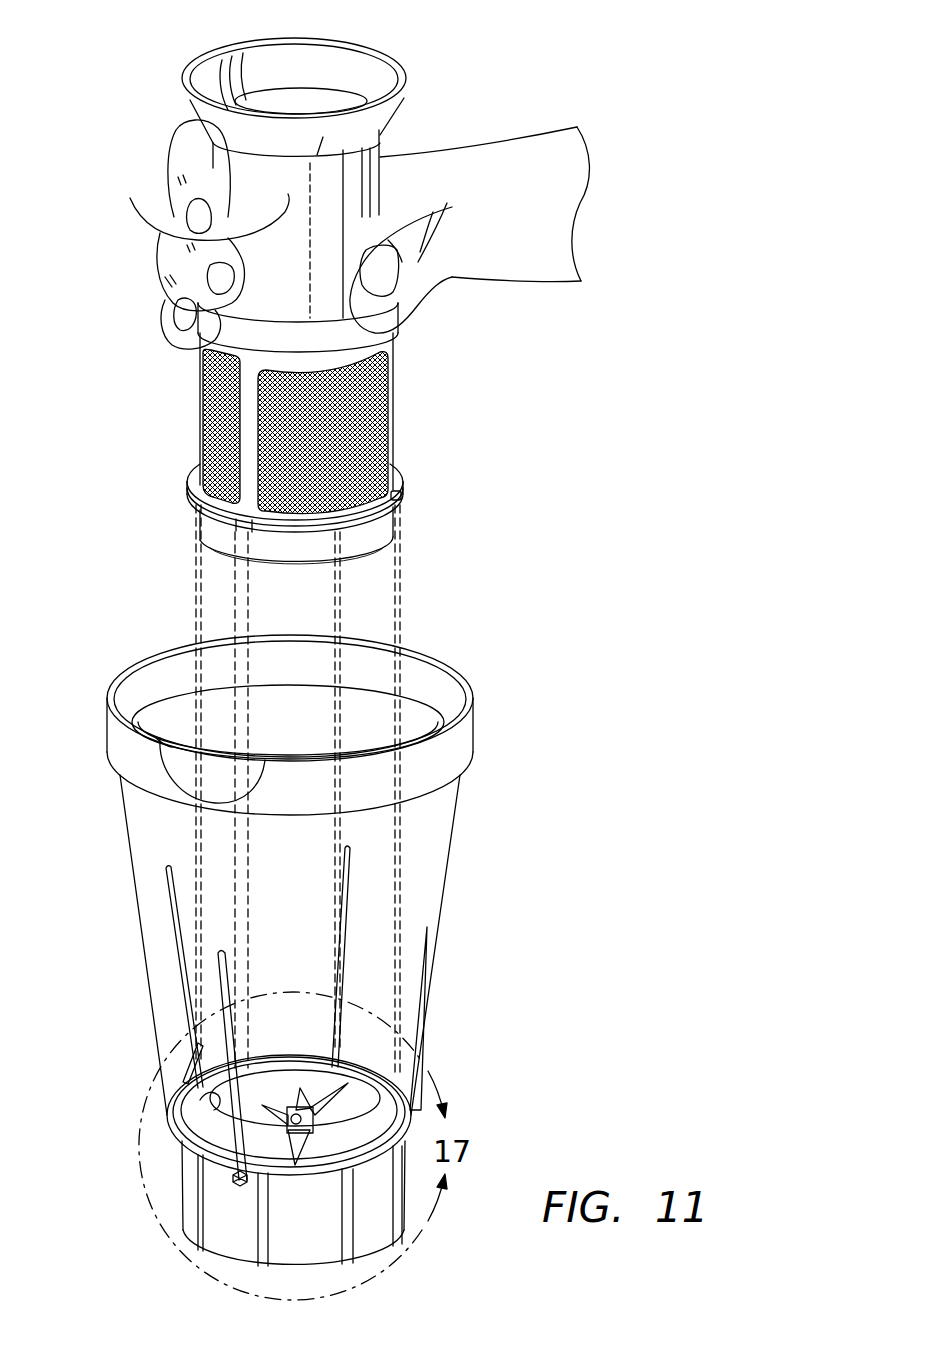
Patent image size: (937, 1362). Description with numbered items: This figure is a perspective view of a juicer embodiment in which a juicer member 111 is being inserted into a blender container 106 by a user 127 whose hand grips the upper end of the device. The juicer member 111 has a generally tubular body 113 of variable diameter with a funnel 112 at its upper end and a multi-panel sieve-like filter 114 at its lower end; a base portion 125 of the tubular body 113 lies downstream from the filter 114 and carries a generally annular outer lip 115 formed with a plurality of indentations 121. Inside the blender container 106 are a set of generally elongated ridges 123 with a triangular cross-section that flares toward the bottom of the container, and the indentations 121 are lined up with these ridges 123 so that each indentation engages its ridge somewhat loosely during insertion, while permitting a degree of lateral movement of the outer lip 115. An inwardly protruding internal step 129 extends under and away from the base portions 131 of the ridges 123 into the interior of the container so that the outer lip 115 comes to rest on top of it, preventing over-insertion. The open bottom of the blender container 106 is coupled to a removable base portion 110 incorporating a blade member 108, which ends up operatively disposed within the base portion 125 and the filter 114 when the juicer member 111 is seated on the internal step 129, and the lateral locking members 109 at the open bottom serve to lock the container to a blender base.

The blender container 106 is at (433, 877).
The blade member 108 is at (285, 1118).
The locking members 109 is at (236, 1179).
The removable base portion 110 is at (367, 1200).
The juicer member 111 is at (333, 308).
The funnel 112 is at (402, 78).
The tubular body 113 is at (133, 200).
The multi-panel sieve-like filter 114 is at (206, 428).
The outer lip 115 is at (367, 525).
The indentations 121 is at (403, 497).
The ridges 123 is at (222, 952).
The base portion 125 is at (337, 548).
The user 127 is at (488, 183).
The internal step 129 is at (200, 1105).
The base portions of ridges 131 is at (198, 1088).